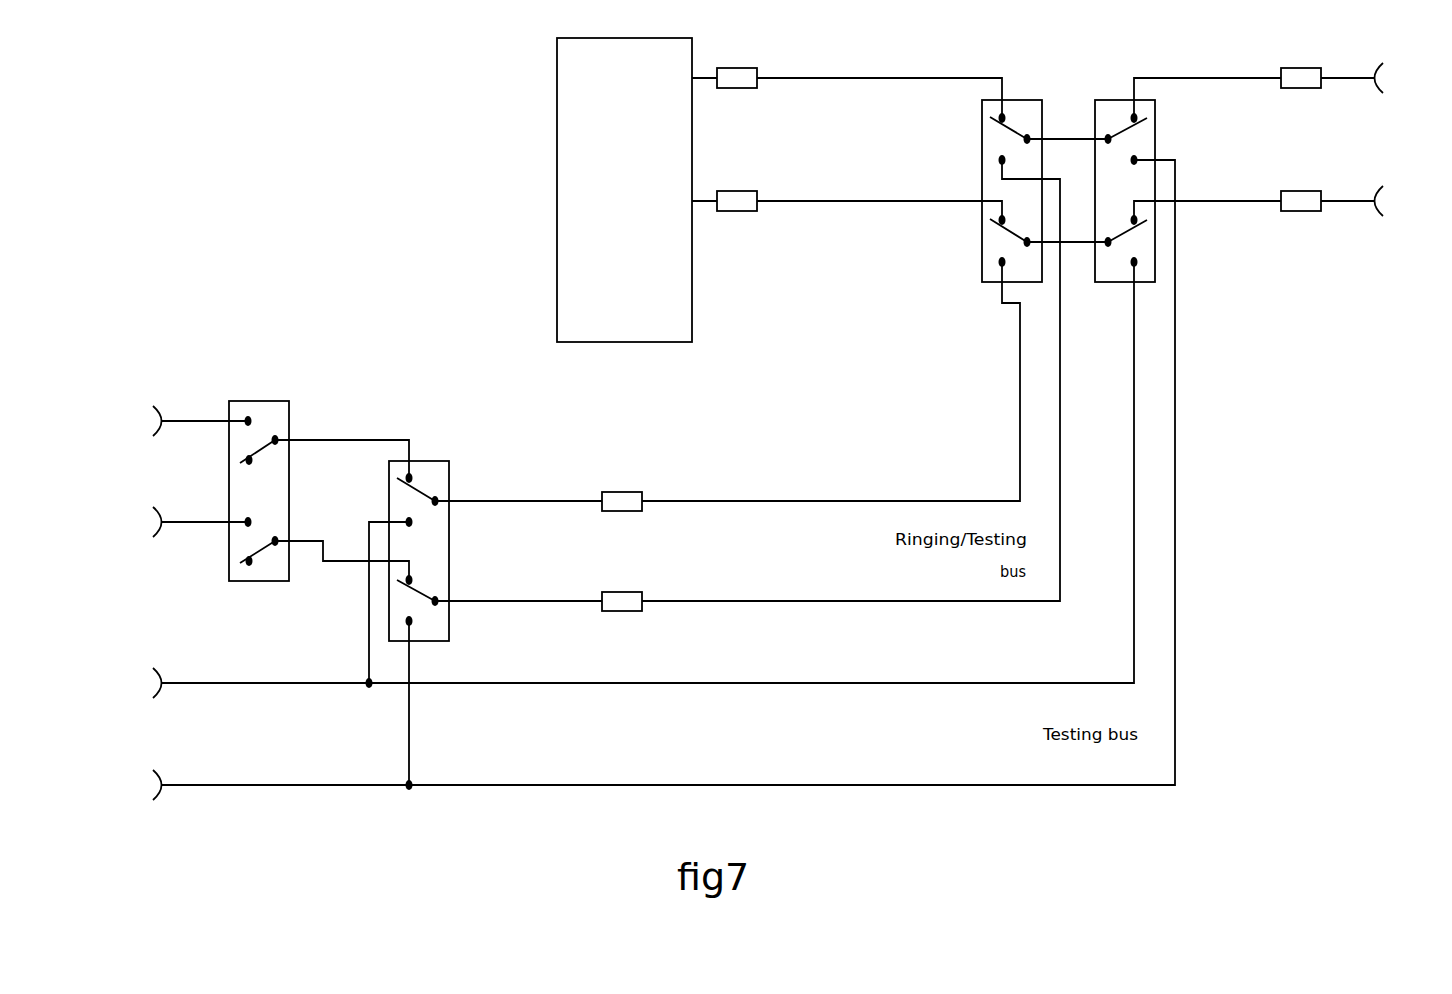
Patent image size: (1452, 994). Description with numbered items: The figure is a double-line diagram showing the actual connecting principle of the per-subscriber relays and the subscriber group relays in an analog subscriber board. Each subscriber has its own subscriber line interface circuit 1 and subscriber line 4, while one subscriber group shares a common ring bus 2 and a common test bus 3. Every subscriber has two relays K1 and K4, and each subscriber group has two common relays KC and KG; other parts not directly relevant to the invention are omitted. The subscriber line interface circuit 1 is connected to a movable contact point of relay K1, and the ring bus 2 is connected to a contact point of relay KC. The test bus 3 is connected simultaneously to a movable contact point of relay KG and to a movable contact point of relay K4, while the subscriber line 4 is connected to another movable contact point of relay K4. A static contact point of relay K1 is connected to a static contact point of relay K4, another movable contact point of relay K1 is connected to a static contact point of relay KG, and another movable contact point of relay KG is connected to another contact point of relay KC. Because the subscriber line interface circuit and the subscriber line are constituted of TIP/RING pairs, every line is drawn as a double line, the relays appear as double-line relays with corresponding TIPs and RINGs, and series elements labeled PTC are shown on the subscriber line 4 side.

The subscriber line interface circuit 1 is at (557, 240).
The ring bus 2 is at (171, 471).
The test bus 3 is at (134, 734).
The subscriber line 4 is at (1366, 139).
The relay K1 is at (1012, 172).
The relay K4 is at (1125, 172).
The relay KC is at (259, 478).
The relay KG is at (420, 535).
The PTC resistor PTC is at (1301, 139).